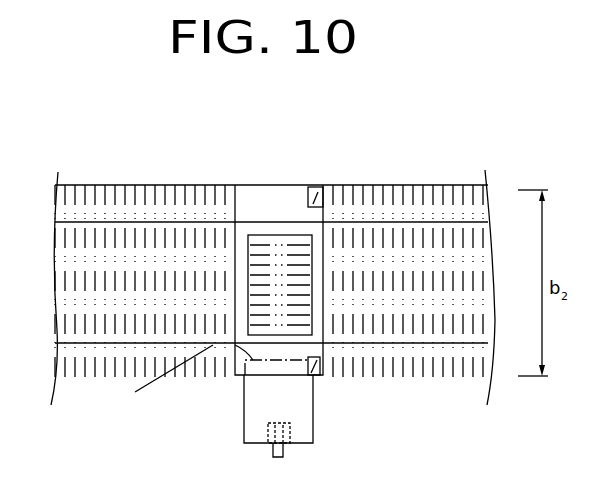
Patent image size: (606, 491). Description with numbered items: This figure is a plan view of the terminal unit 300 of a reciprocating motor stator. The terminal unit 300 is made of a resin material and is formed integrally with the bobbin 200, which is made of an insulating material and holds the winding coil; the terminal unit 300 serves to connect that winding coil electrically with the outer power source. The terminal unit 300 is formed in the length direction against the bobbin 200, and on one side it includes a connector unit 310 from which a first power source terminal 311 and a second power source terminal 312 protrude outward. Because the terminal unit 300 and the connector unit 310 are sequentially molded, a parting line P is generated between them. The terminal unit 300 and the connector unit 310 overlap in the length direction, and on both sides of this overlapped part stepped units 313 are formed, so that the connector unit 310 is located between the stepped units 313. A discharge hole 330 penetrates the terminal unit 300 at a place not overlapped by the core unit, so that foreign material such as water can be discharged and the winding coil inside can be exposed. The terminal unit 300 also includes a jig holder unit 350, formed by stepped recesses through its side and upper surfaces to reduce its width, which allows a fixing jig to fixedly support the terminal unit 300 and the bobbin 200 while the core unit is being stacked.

The bobbin 200 is at (172, 218).
The terminal unit 300 is at (291, 185).
The discharge hole 330 is at (282, 255).
The jig holder unit 350 is at (317, 360).
The stepped unit 313 is at (307, 380).
The parting line P is at (135, 392).
The connector unit 310 is at (244, 430).
The first power source terminal 311 is at (285, 450).
The second power source terminal 312 is at (348, 470).